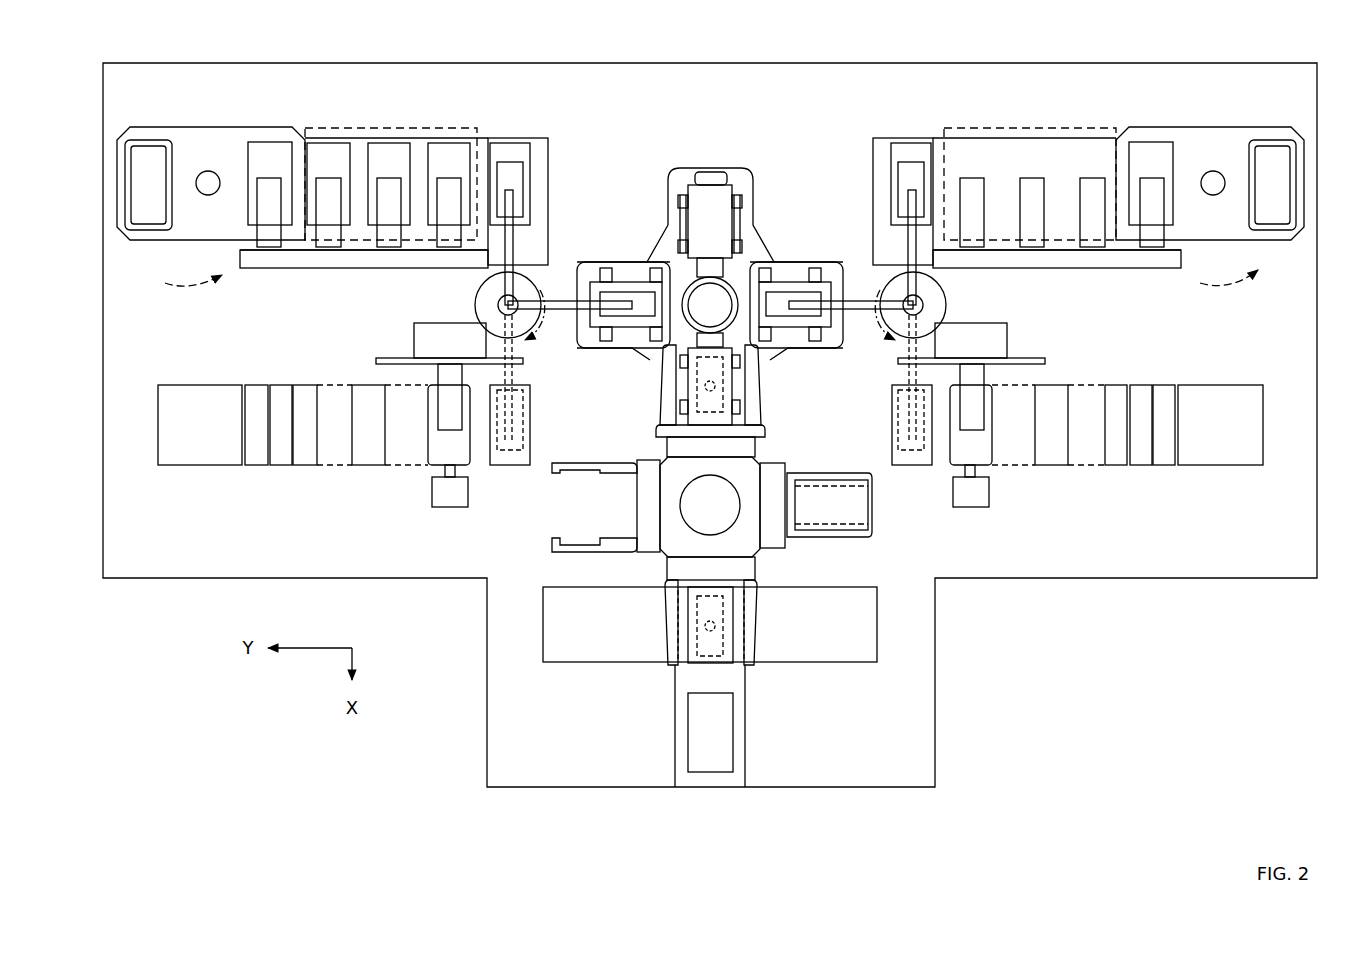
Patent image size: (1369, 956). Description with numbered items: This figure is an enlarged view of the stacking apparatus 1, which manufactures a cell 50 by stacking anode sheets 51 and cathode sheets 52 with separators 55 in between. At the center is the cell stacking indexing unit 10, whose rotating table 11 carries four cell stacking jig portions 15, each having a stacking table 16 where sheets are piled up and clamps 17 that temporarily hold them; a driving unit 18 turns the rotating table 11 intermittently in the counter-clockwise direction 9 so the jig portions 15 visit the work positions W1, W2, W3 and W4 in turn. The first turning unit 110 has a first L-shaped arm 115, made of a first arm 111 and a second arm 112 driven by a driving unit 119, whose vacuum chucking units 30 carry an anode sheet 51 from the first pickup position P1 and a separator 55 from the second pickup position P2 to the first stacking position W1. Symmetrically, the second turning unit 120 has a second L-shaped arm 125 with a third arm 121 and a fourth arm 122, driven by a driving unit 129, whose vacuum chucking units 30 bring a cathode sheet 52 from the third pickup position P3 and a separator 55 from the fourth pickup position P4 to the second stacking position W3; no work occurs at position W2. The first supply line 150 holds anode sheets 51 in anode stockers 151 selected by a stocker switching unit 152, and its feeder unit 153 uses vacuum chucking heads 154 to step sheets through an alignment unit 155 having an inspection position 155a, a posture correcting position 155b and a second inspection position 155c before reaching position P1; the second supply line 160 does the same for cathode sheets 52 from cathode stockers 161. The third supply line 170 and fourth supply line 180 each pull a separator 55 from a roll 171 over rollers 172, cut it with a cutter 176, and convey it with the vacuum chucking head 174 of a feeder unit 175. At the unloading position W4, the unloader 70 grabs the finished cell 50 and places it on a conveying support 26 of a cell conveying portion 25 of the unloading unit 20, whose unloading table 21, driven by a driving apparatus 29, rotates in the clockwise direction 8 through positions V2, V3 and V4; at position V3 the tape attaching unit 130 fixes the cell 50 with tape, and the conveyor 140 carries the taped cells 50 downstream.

The stacking apparatus 1 is at (1015, 628).
The clockwise direction 8 is at (815, 578).
The counter-clockwise direction 9 is at (793, 265).
The cell stacking indexing unit 10 is at (758, 150).
The rotating table 11 is at (672, 166).
The cell stacking jig portion 15 is at (582, 270).
The stacking table 16 is at (722, 178).
The clamps 17 is at (740, 196).
The driving unit 18 is at (650, 396).
The stacked cell unloading indexing unit 20 is at (608, 570).
The unloading table 21 is at (590, 572).
The cell conveying portion 25 is at (555, 520).
The conveying support 26 is at (578, 536).
The driving apparatus 29 is at (672, 590).
The vacuum chucking unit 30 is at (515, 185).
The cell 50 is at (700, 220).
The anode sheet 51 is at (905, 160).
The cathode sheet 52 is at (322, 153).
The separator 55 is at (515, 466).
The unloader 70 is at (656, 430).
The first turning unit 110 is at (965, 298).
The first arm 111 is at (880, 262).
The second arm 112 is at (876, 256).
The first L-shaped arm 115 is at (928, 298).
The driving unit 119 is at (948, 312).
The second turning unit 120 is at (486, 322).
The third arm 121 is at (520, 240).
The fourth arm 122 is at (520, 330).
The second L-shaped arm 125 is at (496, 296).
The driving unit 129 is at (512, 345).
The tape attaching unit 130 is at (853, 645).
The conveyor 140 is at (745, 742).
The first supply line 150 is at (1170, 92).
The anode stocker 151 is at (1157, 158).
The stocker switching unit 152 is at (207, 127).
The feeder unit 153 is at (505, 140).
The vacuum chucking head 154 is at (448, 240).
The alignment unit 155 is at (408, 128).
The inspection position 155a is at (1100, 126).
The posture correcting position 155b is at (1033, 126).
The second inspection position 155c is at (975, 126).
The second supply line 160 is at (358, 122).
The cathode stocker 161 is at (153, 150).
The third supply line 170 is at (1152, 524).
The roll 171 is at (205, 458).
The roller 172 is at (368, 455).
The vacuum chucking head 174 is at (448, 376).
The feeder unit 175 is at (418, 325).
The cutter 176 is at (432, 456).
The fourth supply line 180 is at (262, 518).
The first pickup position P1 is at (883, 186).
The second pickup position P2 is at (908, 472).
The third pickup position P3 is at (542, 188).
The fourth pickup position P4 is at (494, 472).
The position V2 is at (810, 545).
The position V3 is at (757, 670).
The position V4 is at (624, 570).
The first stacking position W1 is at (784, 262).
The position W2 is at (710, 160).
The second stacking position W3 is at (615, 270).
The unloading position W4 is at (770, 410).